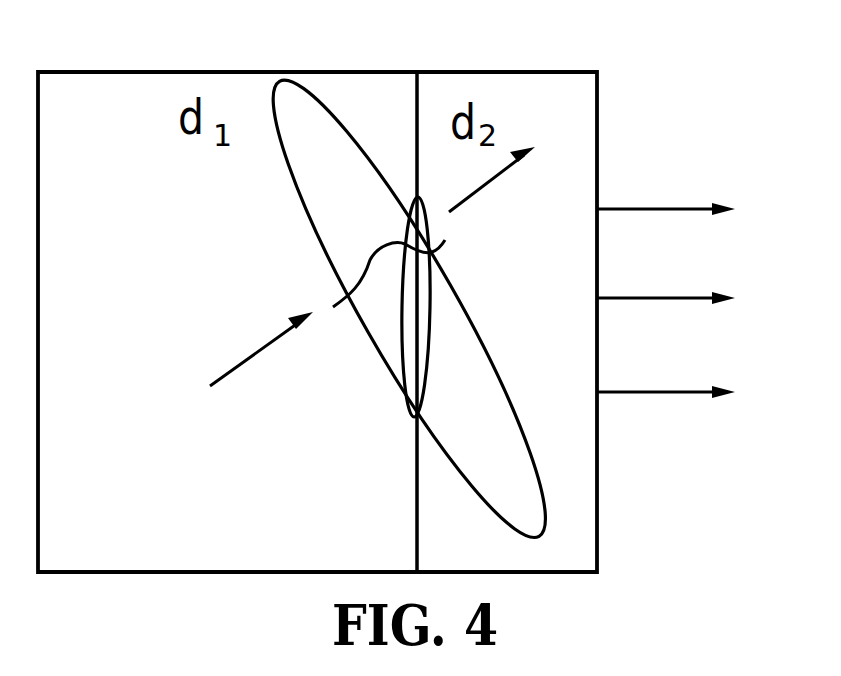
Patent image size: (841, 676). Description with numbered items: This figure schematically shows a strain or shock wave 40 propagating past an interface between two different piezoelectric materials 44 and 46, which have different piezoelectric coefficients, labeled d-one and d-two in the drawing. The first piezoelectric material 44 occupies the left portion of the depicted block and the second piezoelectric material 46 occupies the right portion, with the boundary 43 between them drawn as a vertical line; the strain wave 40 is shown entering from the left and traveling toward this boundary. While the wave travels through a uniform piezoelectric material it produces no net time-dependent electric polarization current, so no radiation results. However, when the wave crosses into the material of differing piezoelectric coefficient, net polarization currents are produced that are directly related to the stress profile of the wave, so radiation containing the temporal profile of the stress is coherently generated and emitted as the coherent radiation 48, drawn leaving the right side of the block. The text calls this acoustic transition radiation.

The strain or shock wave 40 is at (248, 356).
The interface between media 43 is at (413, 89).
The first piezoelectric material 44 is at (127, 137).
The second piezoelectric material 46 is at (568, 121).
The coherent radiation 48 is at (737, 185).